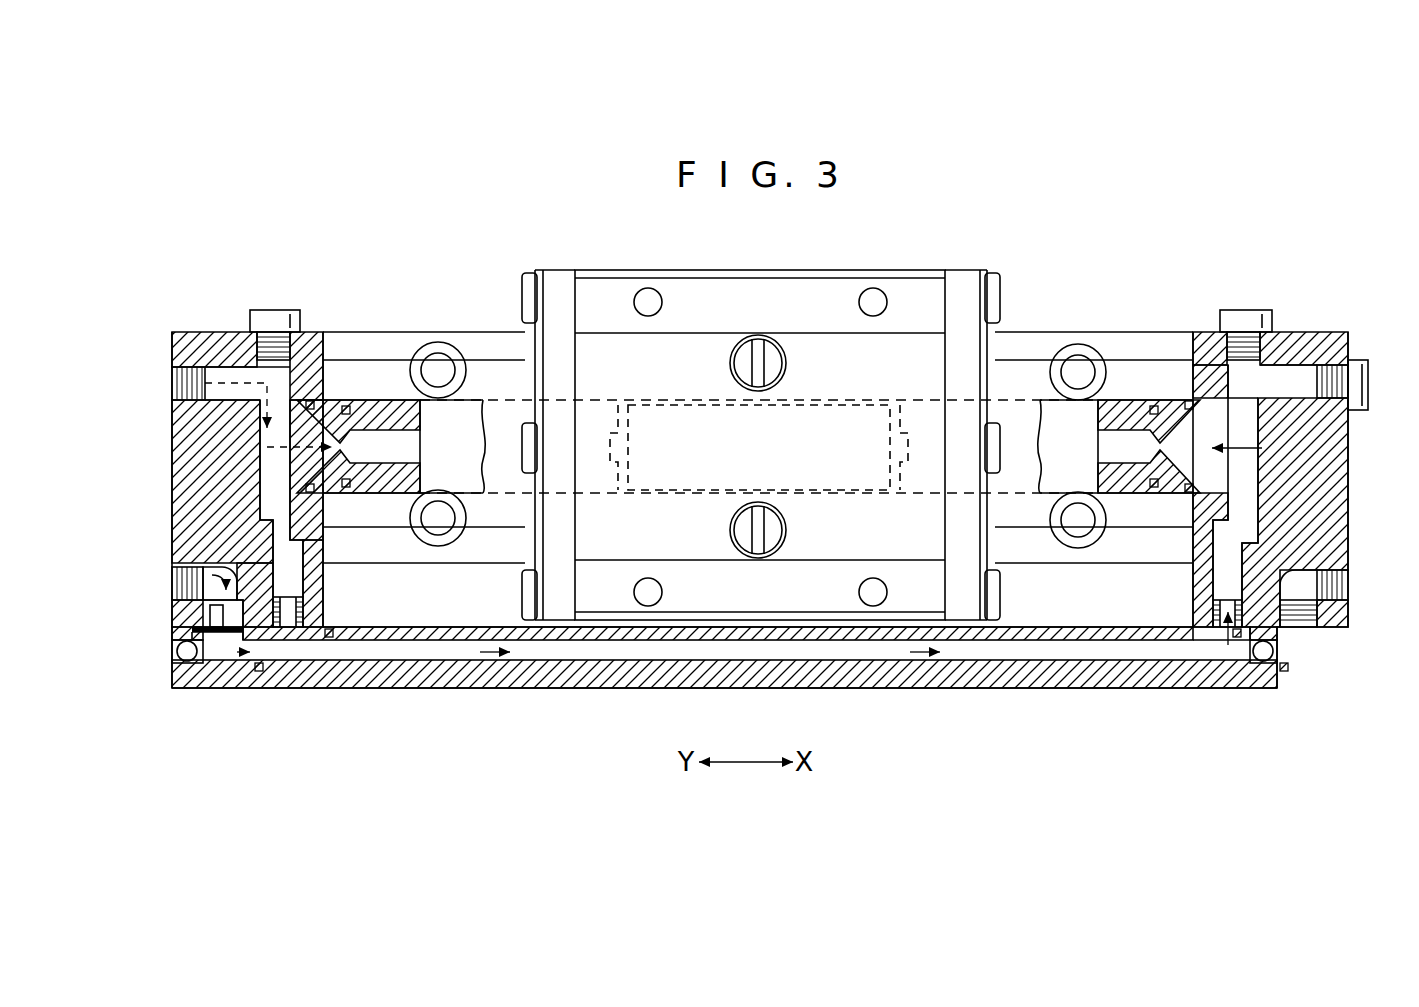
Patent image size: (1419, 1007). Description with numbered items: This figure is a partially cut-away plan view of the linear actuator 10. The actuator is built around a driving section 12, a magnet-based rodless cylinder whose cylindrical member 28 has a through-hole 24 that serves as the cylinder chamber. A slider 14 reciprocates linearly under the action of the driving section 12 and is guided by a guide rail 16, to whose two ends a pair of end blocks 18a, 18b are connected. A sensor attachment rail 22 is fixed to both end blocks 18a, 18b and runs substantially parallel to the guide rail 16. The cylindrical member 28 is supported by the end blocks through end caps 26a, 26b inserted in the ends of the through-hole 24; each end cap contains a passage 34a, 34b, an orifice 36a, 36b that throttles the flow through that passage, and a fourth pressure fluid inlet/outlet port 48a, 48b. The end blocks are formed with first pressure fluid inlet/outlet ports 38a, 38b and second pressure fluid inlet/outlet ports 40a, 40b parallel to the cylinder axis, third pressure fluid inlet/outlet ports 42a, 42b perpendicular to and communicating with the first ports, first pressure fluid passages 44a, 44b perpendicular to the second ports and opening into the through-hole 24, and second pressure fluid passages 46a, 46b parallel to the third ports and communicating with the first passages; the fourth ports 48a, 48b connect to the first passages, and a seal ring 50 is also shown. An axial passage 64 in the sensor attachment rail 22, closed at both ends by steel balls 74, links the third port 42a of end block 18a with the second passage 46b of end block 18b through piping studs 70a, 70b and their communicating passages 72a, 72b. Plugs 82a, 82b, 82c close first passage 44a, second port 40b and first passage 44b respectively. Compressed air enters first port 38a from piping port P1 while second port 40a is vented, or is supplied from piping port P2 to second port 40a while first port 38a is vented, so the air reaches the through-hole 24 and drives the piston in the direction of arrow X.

The linear actuator 10 is at (927, 212).
The driving section 12 is at (1014, 396).
The slider 14 is at (712, 268).
The guide rail 16 is at (533, 690).
The end block 18a is at (198, 332).
The end block 18b is at (1330, 332).
The sensor attachment rail 22 is at (767, 691).
The through-hole 24 is at (471, 343).
The end cap 26a is at (410, 495).
The end cap 26b is at (1120, 410).
The cylindrical member 28 is at (402, 332).
The passage 34a is at (330, 398).
The passage 34b is at (1183, 432).
The orifice 36a is at (357, 495).
The orifice 36b is at (1153, 495).
The first pressure fluid inlet/outlet port 38a is at (172, 598).
The first pressure fluid inlet/outlet port 38b is at (1346, 586).
The second pressure fluid inlet/outlet port 40a is at (232, 367).
The second pressure fluid inlet/outlet port 40b is at (1297, 365).
The third pressure fluid inlet/outlet port 42a is at (275, 690).
The third pressure fluid inlet/outlet port 42b is at (1297, 690).
The first pressure fluid passage 44a is at (262, 457).
The first pressure fluid passage 44b is at (1262, 433).
The second pressure fluid passage 46a is at (340, 690).
The second pressure fluid passage 46b is at (1243, 557).
The fourth pressure fluid inlet/outlet port 48a is at (290, 437).
The fourth pressure fluid inlet/outlet port 48b is at (1245, 458).
The seal ring 50 is at (182, 630).
The passage 64 is at (603, 662).
The piping stud 70a is at (236, 690).
The piping stud 70b is at (1223, 690).
The communicating passage 72a is at (206, 664).
The communicating passage 72b is at (1180, 690).
The steel ball 74 is at (177, 651).
The plug 82a is at (285, 322).
The plug 82b is at (1362, 362).
The plug 82c is at (1250, 316).
The piping port P1 is at (168, 582).
The piping port P2 is at (168, 386).